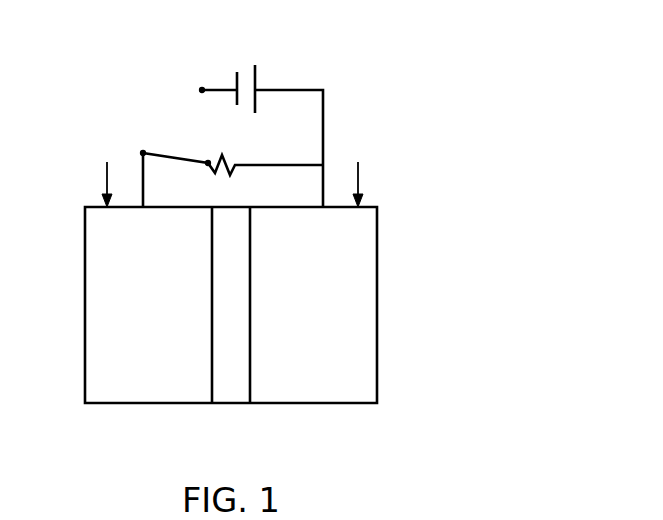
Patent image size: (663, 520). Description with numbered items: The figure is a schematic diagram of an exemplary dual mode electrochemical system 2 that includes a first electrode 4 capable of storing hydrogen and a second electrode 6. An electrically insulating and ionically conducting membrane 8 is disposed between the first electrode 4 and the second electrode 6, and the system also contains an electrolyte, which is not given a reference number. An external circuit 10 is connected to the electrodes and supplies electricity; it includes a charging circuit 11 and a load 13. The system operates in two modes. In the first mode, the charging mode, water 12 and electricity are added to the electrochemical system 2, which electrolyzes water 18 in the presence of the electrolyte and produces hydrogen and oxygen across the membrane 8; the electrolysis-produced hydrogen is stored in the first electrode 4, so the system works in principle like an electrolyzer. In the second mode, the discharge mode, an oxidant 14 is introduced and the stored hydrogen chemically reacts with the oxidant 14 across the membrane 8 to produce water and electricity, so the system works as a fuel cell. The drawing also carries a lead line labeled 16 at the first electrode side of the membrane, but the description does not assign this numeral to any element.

The dual mode electrochemical system 2 is at (528, 60).
The first electrode 4 is at (90, 364).
The second electrode 6 is at (367, 364).
The membrane 8 is at (233, 393).
The external circuit 10 is at (325, 103).
The charging circuit 11 is at (257, 66).
The water 12 is at (107, 172).
The load 13 is at (228, 160).
The oxidant 14 is at (360, 172).
The first electrode surface 16 is at (212, 384).
The water 18 is at (250, 384).